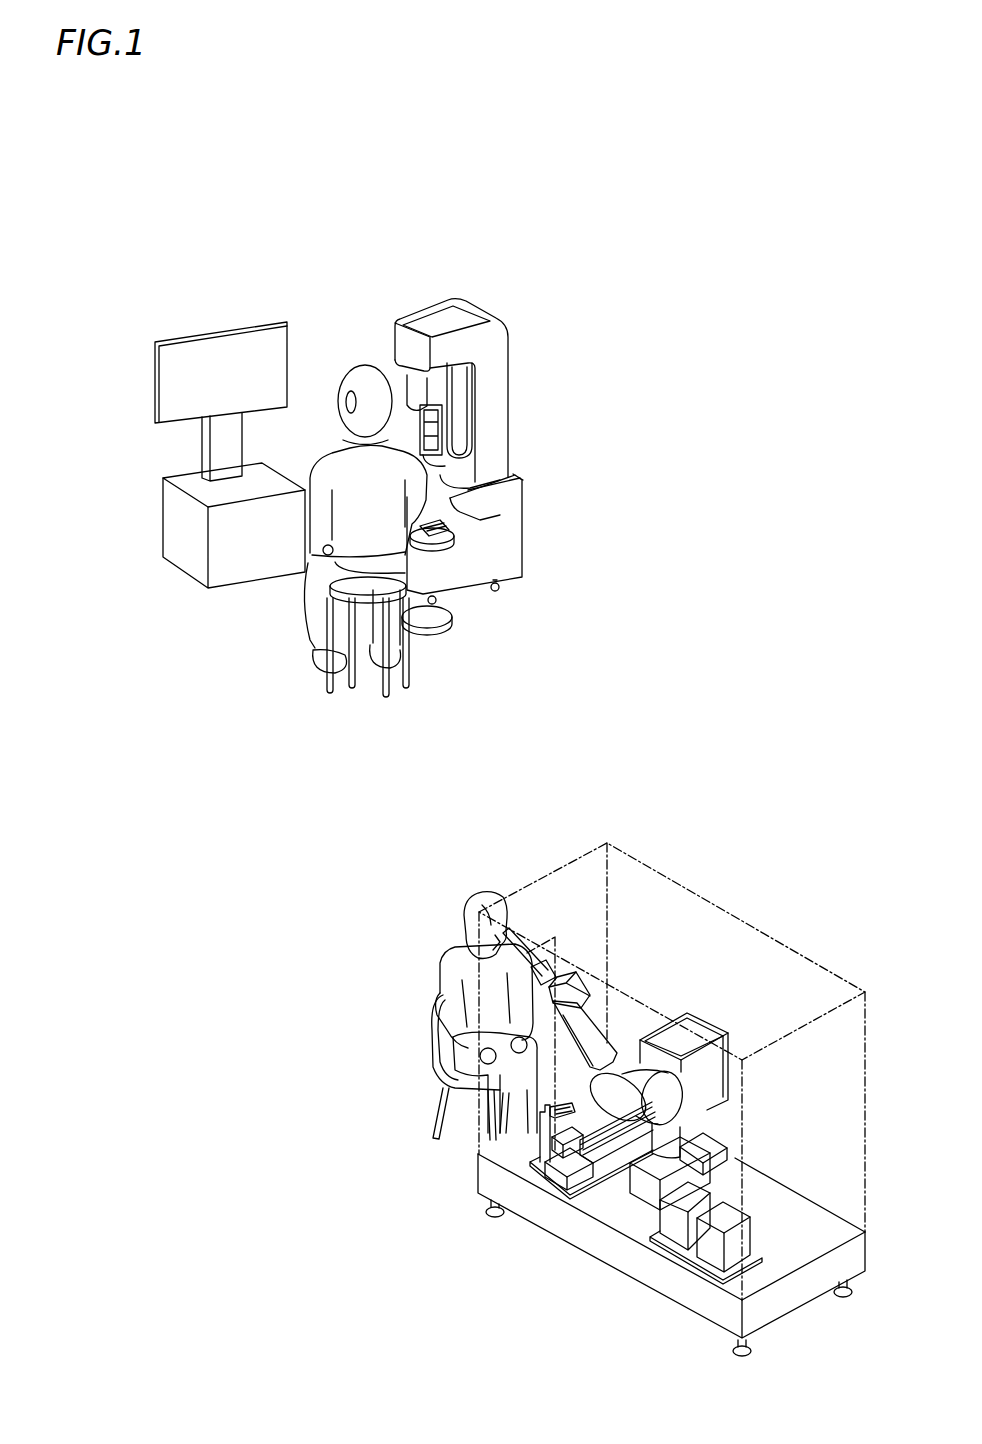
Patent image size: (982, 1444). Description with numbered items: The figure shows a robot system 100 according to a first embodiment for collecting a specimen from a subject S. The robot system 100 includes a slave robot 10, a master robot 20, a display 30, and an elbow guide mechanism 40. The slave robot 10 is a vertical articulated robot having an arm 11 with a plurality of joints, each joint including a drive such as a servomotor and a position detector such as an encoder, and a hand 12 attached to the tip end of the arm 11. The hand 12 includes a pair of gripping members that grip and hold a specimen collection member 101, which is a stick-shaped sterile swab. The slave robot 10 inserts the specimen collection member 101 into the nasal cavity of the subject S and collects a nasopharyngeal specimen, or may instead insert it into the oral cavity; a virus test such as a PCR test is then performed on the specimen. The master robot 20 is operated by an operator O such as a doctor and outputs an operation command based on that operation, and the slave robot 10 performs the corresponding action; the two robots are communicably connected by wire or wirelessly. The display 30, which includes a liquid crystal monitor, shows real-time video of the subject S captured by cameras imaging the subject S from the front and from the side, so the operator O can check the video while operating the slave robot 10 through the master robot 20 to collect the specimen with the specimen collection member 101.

The robot system 100 is at (140, 202).
The display 30 is at (298, 311).
The operator O is at (363, 357).
The master robot 20 is at (535, 335).
The elbow guide mechanism 40 is at (464, 536).
The subject S is at (444, 930).
The slave robot 10 is at (665, 1057).
The arm 11 is at (631, 1030).
The hand 12 is at (582, 969).
The specimen collection member 101 is at (520, 934).